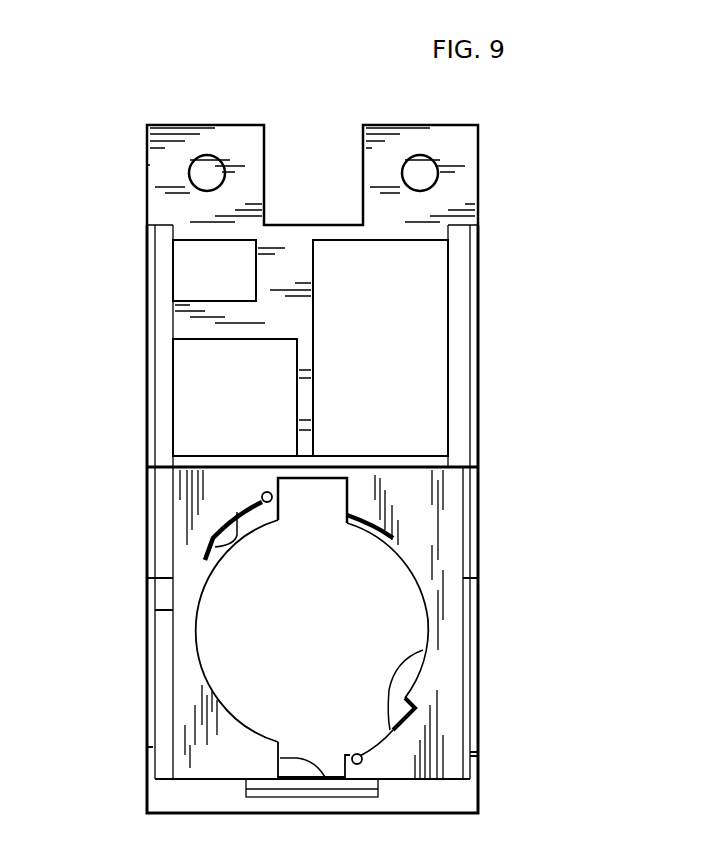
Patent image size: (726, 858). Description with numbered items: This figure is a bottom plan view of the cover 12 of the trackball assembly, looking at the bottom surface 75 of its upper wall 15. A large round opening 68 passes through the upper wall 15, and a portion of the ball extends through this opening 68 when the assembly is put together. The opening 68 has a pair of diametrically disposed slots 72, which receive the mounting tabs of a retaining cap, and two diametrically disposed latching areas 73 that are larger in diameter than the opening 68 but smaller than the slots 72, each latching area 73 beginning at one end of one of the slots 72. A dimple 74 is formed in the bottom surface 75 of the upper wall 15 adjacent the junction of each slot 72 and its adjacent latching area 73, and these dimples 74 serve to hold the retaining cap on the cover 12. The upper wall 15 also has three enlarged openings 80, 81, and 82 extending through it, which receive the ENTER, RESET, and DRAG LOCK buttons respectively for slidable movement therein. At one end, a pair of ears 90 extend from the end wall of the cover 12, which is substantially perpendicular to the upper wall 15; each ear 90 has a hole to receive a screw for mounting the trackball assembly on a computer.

The cover 12 is at (140, 737).
The upper wall 15 is at (225, 762).
The opening 68 is at (200, 652).
The slots 72 is at (350, 480).
The latching areas 73 is at (210, 545).
The dimple 74 is at (262, 497).
The bottom surface 75 is at (415, 525).
The enlarged opening 80 is at (405, 245).
The enlarged opening 81 is at (215, 340).
The enlarged opening 82 is at (200, 242).
The ears 90 is at (147, 165).